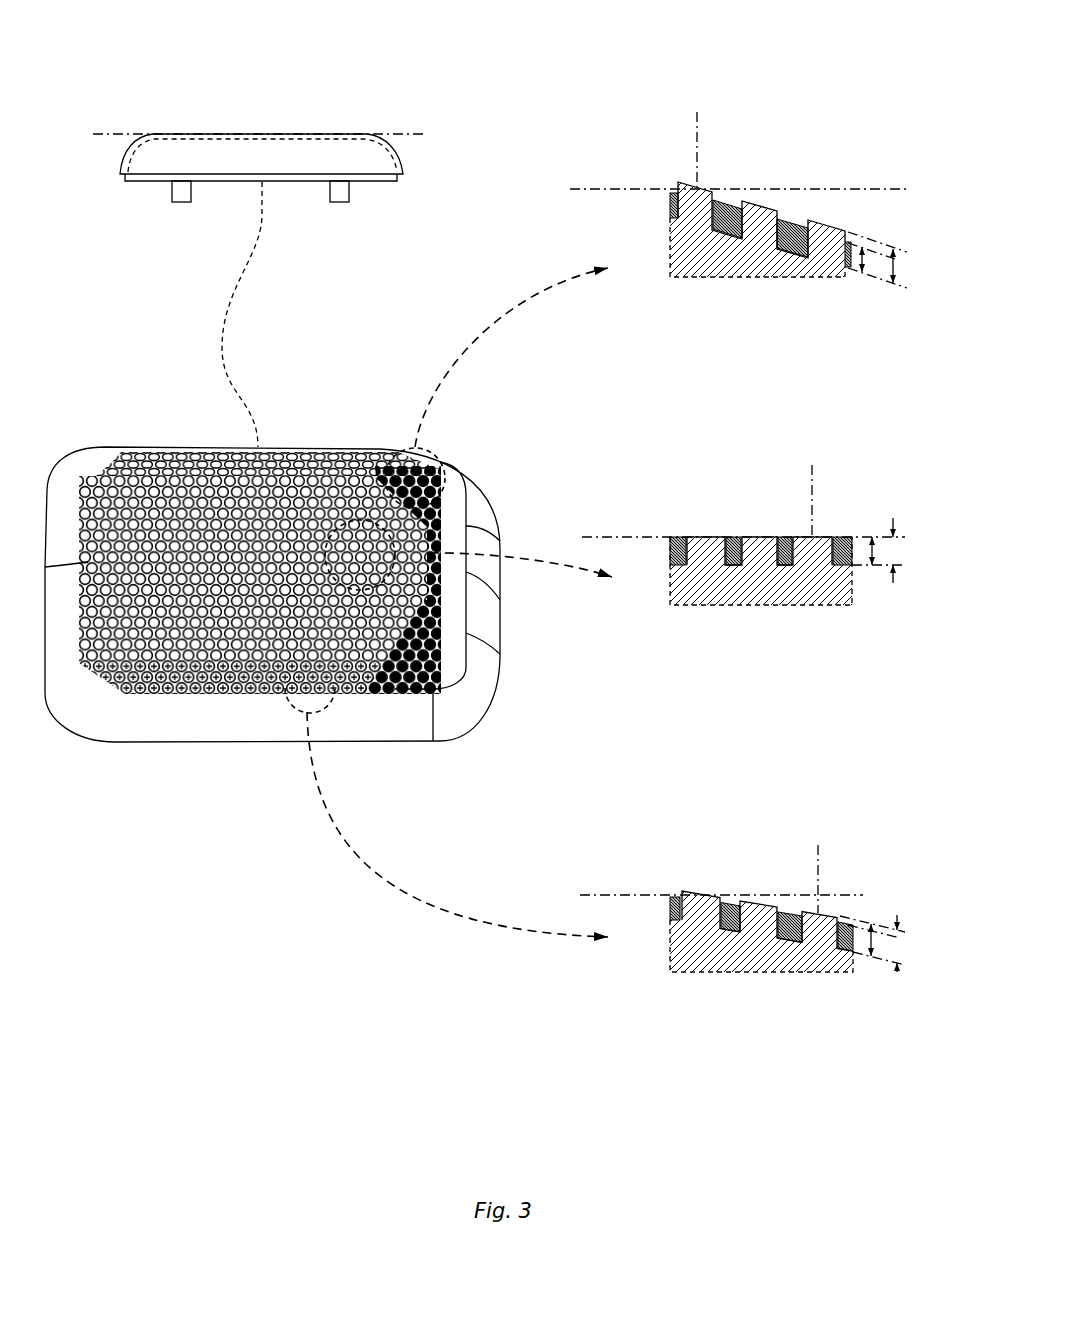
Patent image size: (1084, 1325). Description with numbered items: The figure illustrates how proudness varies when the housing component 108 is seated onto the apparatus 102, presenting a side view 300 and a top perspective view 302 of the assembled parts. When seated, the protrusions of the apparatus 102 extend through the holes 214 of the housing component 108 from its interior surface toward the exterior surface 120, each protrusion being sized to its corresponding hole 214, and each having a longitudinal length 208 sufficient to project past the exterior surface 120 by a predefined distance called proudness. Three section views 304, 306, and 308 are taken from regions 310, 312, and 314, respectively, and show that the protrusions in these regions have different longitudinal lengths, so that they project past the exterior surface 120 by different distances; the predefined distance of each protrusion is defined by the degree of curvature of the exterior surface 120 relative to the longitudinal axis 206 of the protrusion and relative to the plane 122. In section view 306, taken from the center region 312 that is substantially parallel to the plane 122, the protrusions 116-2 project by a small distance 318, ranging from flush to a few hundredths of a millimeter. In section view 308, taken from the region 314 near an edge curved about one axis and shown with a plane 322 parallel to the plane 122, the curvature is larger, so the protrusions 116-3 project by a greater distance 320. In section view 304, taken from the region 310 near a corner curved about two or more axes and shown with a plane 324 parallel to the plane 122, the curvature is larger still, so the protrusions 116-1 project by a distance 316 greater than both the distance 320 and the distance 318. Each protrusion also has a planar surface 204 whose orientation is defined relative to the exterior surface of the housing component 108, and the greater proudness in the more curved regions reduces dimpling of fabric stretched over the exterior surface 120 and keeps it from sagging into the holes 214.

The side view 300 is at (138, 62).
The top perspective view 302 is at (138, 385).
The section view 304 is at (637, 92).
The section view 306 is at (638, 430).
The section view 308 is at (637, 784).
The apparatus 102 is at (147, 180).
The housing component 108 is at (128, 163).
The exterior surface 120 is at (264, 131).
The plane 122 is at (122, 133).
The protrusions 116-1 is at (823, 232).
The protrusions 116-2 is at (813, 540).
The protrusions 116-3 is at (817, 920).
The planar surface 204 is at (177, 693).
The longitudinal axis 206 is at (702, 112).
The length 208 is at (895, 283).
The holes 214 is at (674, 190).
The region 310 is at (411, 444).
The region 312 is at (353, 508).
The region 314 is at (297, 712).
The distance 316 is at (873, 236).
The distance 318 is at (874, 532).
The distance 320 is at (872, 916).
The plane 322 is at (580, 895).
The plane 324 is at (573, 189).